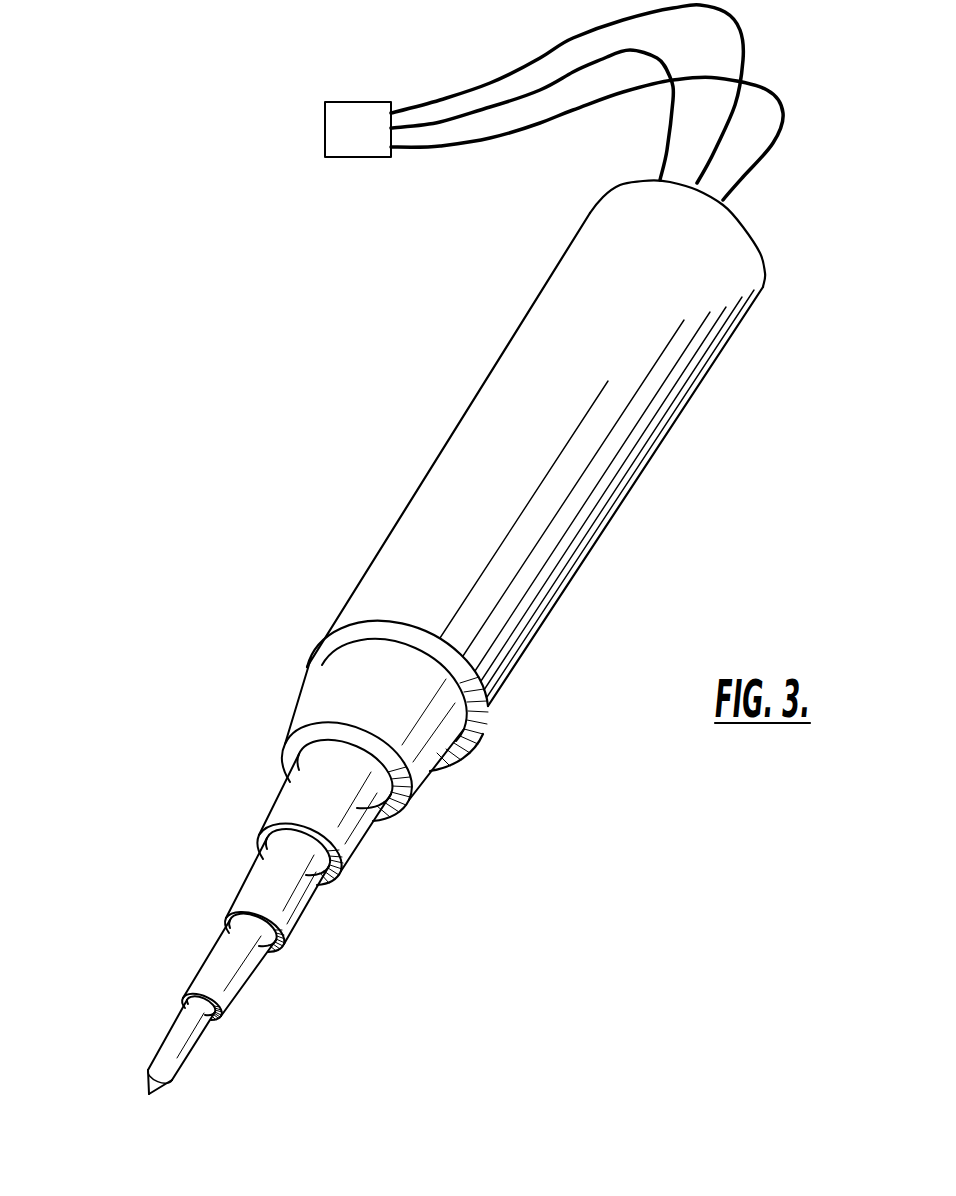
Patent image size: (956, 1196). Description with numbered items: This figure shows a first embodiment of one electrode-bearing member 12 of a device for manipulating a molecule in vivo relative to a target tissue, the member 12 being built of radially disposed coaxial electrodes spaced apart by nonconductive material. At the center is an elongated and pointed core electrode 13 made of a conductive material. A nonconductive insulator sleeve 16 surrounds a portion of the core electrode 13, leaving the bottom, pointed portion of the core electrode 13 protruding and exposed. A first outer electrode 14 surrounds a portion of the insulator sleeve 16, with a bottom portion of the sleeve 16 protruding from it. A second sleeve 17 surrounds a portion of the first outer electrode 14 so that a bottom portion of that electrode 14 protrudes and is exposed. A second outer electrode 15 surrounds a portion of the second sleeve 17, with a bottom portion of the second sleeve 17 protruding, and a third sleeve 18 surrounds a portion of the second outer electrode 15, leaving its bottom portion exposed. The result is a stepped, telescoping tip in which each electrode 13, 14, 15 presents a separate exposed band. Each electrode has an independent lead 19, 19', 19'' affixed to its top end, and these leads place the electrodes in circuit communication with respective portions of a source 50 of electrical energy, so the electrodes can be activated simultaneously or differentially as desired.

The member 12 is at (775, 519).
The core electrode 13 is at (165, 1045).
The first outer electrode 14 is at (262, 884).
The second outer electrode 15 is at (328, 708).
The nonconductive insulator sleeve 16 is at (237, 980).
The second sleeve 17 is at (350, 832).
The third sleeve 18 is at (540, 567).
The lead 19 is at (605, 136).
The lead 19' is at (590, 94).
The lead 19'' is at (552, 106).
The source of electrical energy 50 is at (375, 150).